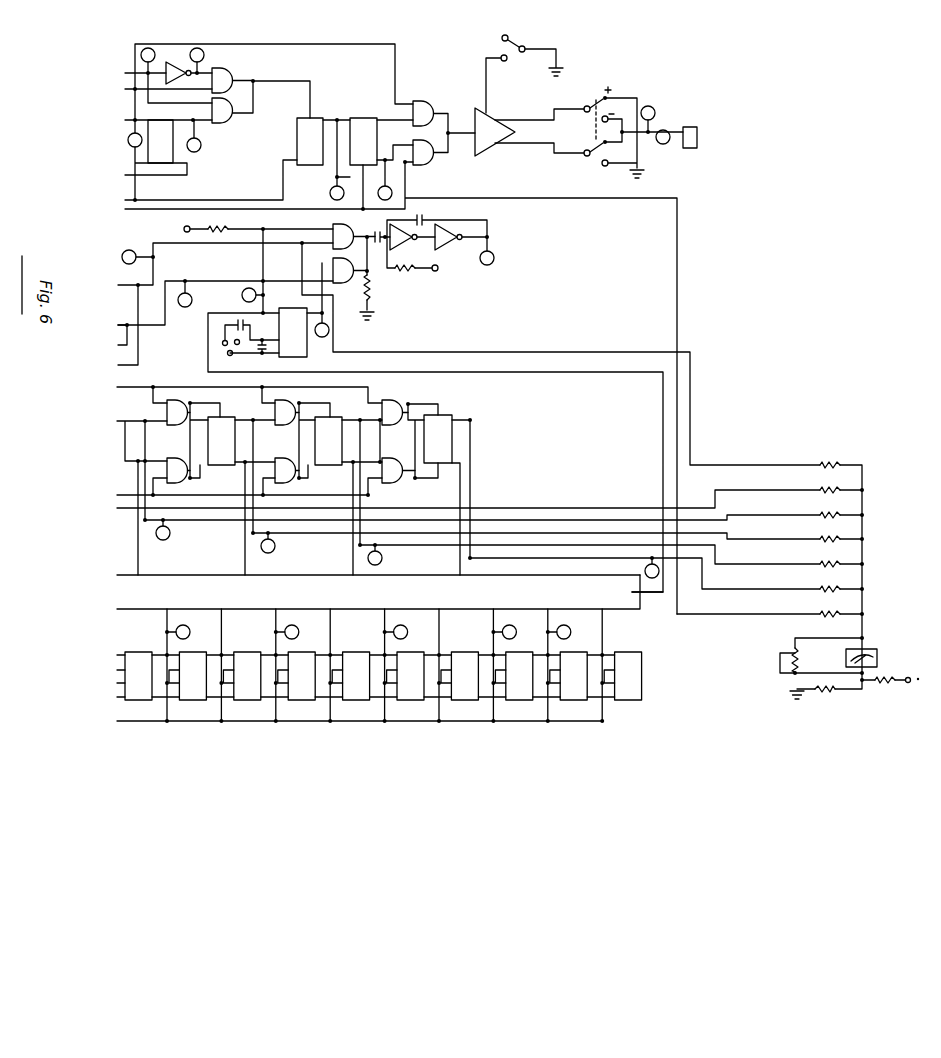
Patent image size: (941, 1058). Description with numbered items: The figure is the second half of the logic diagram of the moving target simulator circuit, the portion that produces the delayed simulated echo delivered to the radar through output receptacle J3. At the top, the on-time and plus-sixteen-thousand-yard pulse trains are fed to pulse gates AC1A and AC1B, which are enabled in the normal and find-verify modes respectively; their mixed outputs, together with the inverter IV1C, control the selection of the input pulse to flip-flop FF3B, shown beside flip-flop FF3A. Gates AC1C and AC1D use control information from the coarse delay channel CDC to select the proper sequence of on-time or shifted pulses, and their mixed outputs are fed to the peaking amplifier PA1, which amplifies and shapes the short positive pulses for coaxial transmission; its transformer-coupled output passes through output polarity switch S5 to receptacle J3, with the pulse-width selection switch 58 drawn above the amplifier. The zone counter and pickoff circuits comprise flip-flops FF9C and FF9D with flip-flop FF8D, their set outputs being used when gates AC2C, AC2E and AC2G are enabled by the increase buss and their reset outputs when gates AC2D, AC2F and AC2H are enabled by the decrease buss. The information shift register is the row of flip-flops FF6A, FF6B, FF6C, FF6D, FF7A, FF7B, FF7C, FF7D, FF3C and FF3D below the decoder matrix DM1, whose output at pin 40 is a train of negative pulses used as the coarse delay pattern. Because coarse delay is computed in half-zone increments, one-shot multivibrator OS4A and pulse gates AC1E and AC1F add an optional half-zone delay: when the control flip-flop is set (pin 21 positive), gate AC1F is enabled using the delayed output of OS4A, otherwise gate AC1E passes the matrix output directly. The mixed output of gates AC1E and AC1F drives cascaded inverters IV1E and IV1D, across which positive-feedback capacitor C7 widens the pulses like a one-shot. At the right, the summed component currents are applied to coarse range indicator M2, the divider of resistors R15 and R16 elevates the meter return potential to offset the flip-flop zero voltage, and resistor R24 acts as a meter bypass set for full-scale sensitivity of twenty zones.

The inverter IV1C is at (174, 62).
The pulse gate AC1A is at (236, 74).
The pulse gate AC1B is at (222, 119).
The flip-flop FF3A is at (148, 150).
The flip-flop FF3B is at (297, 154).
The gate AC1C is at (448, 93).
The gate AC1D is at (418, 166).
The peaking amplifier PA1 is at (494, 118).
The switch 58 is at (527, 37).
The output polarity switch S5 is at (594, 130).
The output receptacle J3 is at (697, 135).
The pin 21 is at (127, 325).
The pulse gate AC1E is at (344, 230).
The positive-feedback capacitor C7 is at (415, 218).
The inverter IV1E is at (400, 250).
The inverter IV1D is at (444, 250).
The pulse gate AC1F is at (356, 286).
The one-shot multi-vibrator OS4A is at (307, 355).
The gate AC2C is at (167, 412).
The gate AC2D is at (167, 470).
The flip-flop FF9C is at (227, 417).
The gate AC2E is at (275, 412).
The gate AC2F is at (282, 480).
The flip-flop FF9D is at (333, 430).
The gate AC2G is at (398, 400).
The gate AC2H is at (393, 484).
The flip-flop FF8D is at (455, 416).
The coarse delay channel CDC is at (118, 563).
The decoder matrix DM1 is at (228, 609).
The pin 40 is at (634, 592).
The flip-flop FF6A is at (140, 700).
The flip-flop FF6B is at (195, 700).
The flip-flop FF6C is at (246, 700).
The flip-flop FF6D is at (302, 700).
The flip-flop FF7A is at (354, 660).
The flip-flop FF7B is at (411, 700).
The flip-flop FF7C is at (473, 700).
The flip-flop FF7D is at (518, 700).
The flip-flop FF3C is at (571, 662).
The flip-flop FF3D is at (642, 672).
The resistor R24 is at (795, 654).
The coarse range indicator M2 is at (877, 658).
The resistor R15 is at (828, 692).
The resistor R16 is at (886, 684).